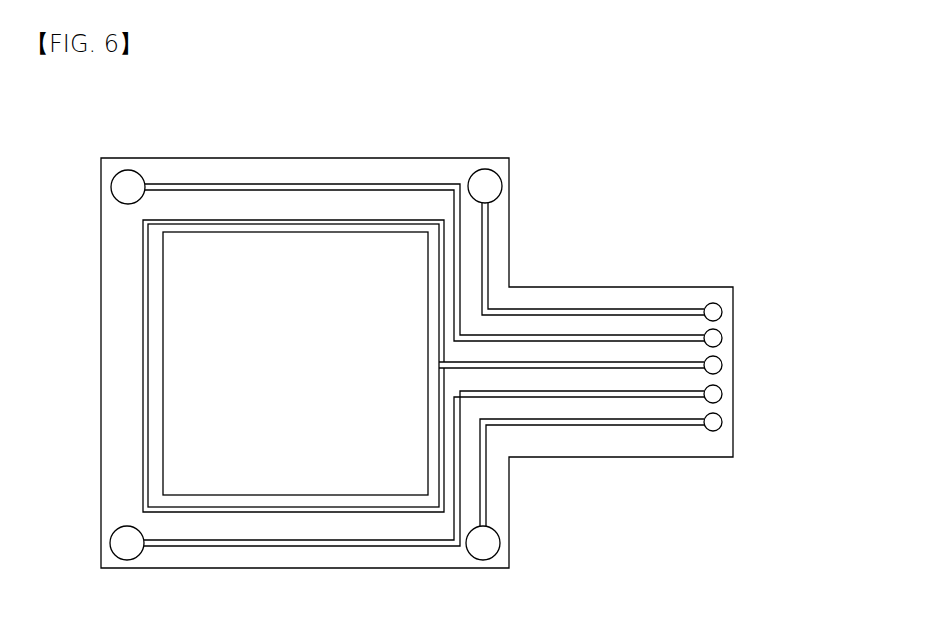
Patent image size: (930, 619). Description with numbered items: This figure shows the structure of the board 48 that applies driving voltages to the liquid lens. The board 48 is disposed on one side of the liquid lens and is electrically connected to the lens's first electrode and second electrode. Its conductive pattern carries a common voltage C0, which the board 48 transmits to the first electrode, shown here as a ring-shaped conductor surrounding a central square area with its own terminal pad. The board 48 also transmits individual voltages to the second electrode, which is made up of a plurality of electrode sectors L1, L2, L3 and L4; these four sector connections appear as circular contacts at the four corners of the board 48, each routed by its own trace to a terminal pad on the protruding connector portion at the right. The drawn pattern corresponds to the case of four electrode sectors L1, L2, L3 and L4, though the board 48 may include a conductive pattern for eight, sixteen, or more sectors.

The board 48 is at (100, 363).
The electrode sector L1 is at (722, 338).
The electrode sector L2 is at (722, 394).
The electrode sector L3 is at (722, 422).
The electrode sector L4 is at (722, 312).
The common voltage C0 is at (722, 365).